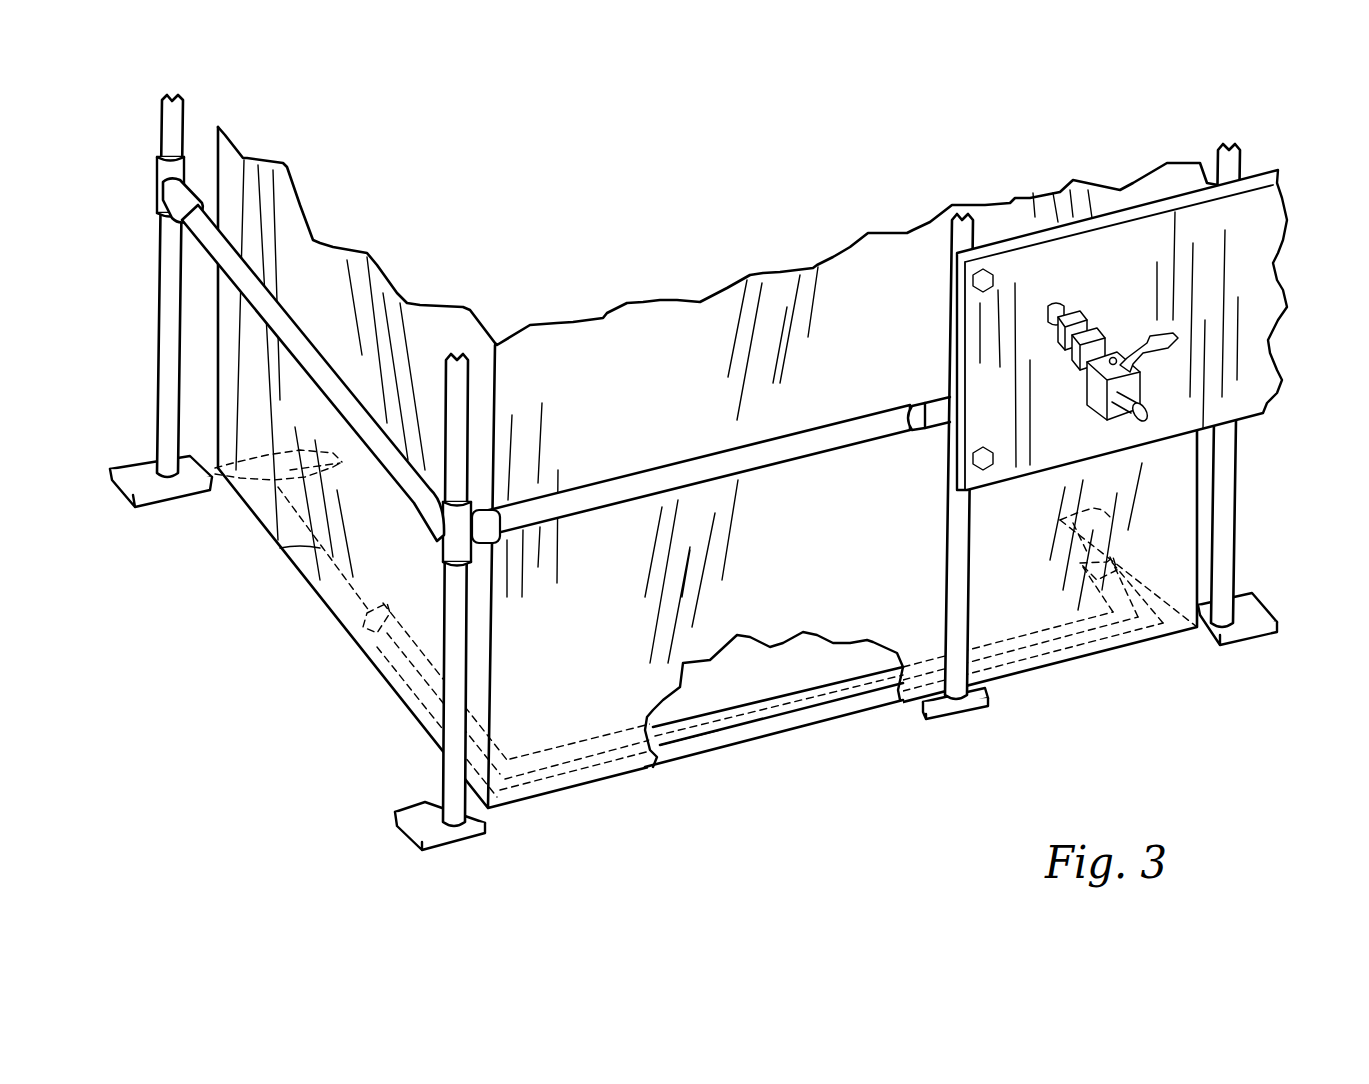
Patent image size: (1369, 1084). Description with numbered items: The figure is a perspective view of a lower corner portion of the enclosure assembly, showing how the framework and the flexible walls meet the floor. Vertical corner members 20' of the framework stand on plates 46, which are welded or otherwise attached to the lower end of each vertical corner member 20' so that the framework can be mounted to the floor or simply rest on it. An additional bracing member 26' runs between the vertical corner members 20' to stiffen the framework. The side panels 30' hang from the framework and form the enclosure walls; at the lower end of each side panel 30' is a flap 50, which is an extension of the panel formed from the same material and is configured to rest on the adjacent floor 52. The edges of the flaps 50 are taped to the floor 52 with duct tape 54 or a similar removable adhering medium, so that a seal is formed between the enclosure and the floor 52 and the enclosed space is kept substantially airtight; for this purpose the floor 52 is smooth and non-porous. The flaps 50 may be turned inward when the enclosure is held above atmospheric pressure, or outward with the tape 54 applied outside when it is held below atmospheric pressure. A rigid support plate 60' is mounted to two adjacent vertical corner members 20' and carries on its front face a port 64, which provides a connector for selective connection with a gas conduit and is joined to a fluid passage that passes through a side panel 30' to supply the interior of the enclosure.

The vertical corner member 20' is at (698, 460).
The bracing member 26' is at (507, 360).
The side panel 30' is at (764, 467).
The plate 46 is at (455, 842).
The flap 50 is at (298, 573).
The floor surface 52 is at (752, 688).
The duct tape 54 is at (357, 645).
The rigid support plate 60' is at (1158, 330).
The port 64 is at (1133, 350).